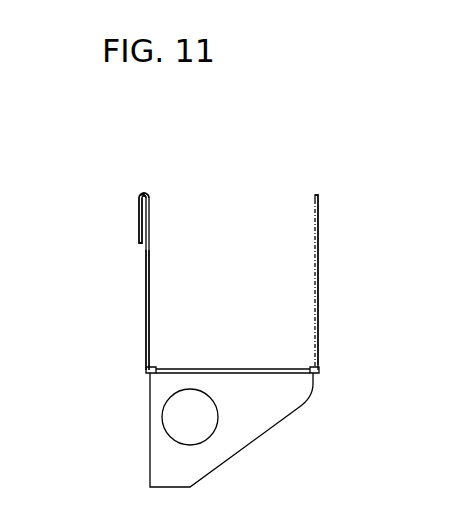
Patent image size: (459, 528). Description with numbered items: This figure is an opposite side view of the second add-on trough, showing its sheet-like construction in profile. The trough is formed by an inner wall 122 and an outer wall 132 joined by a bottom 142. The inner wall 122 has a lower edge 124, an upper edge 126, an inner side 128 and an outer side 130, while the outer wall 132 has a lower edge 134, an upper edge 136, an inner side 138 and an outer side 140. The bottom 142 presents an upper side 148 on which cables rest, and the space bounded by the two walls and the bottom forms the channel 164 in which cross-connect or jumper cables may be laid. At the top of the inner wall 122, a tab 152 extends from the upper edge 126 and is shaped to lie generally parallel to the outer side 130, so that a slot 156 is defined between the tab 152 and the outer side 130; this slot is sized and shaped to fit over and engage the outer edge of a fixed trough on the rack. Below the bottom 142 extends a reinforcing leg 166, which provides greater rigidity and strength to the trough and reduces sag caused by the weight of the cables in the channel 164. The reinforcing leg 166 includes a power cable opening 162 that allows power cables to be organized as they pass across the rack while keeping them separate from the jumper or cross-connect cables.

The inner wall 122 is at (152, 301).
The lower edge 124 is at (145, 372).
The upper edge 126 is at (144, 195).
The inner side 128 is at (150, 346).
The outer side 130 is at (146, 348).
The outer wall 132 is at (320, 231).
The lower edge 134 is at (314, 373).
The upper edge 136 is at (317, 195).
The inner side 138 is at (314, 293).
The outer side 140 is at (319, 257).
The bottom 142 is at (238, 369).
The upper side 148 is at (290, 369).
The tab 152 is at (139, 231).
The slot 156 is at (141, 247).
The power cable opening 162 is at (164, 426).
The channel 164 is at (233, 240).
The reinforcing leg 166 is at (248, 427).